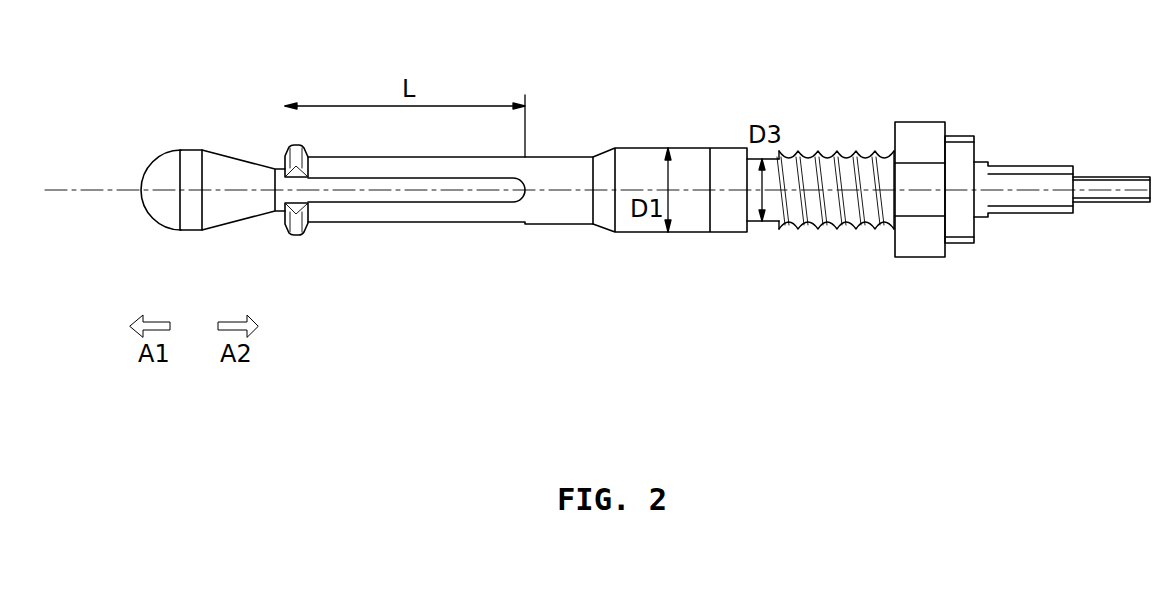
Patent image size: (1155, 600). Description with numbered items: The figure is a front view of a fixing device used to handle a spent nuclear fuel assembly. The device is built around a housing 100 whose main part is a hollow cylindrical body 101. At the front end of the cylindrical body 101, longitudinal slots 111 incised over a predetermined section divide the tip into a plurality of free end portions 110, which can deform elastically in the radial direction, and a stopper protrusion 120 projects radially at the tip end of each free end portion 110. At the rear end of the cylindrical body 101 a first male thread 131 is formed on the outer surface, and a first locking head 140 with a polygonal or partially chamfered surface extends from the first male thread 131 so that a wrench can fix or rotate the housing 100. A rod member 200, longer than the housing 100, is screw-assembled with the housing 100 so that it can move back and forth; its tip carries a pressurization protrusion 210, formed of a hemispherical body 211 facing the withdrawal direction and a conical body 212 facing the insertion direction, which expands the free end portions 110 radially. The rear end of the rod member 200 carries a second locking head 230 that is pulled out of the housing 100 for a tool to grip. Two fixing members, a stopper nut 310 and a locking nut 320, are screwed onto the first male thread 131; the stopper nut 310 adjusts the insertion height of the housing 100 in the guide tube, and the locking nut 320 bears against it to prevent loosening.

The housing 100 is at (626, 96).
The hollow cylindrical body 101 is at (678, 152).
The free end portions 110 is at (484, 216).
The slots 111 is at (400, 197).
The stopper protrusion 120 is at (297, 233).
The first male thread 131 is at (828, 152).
The first locking head 140 is at (1036, 165).
The rod member 200 is at (199, 122).
The pressurization protrusion 210 is at (167, 163).
The hemispherical body 211 is at (166, 222).
The conical body 212 is at (237, 213).
The second locking head 230 is at (1119, 180).
The stopper nut 310 is at (913, 125).
The locking nut 320 is at (965, 142).